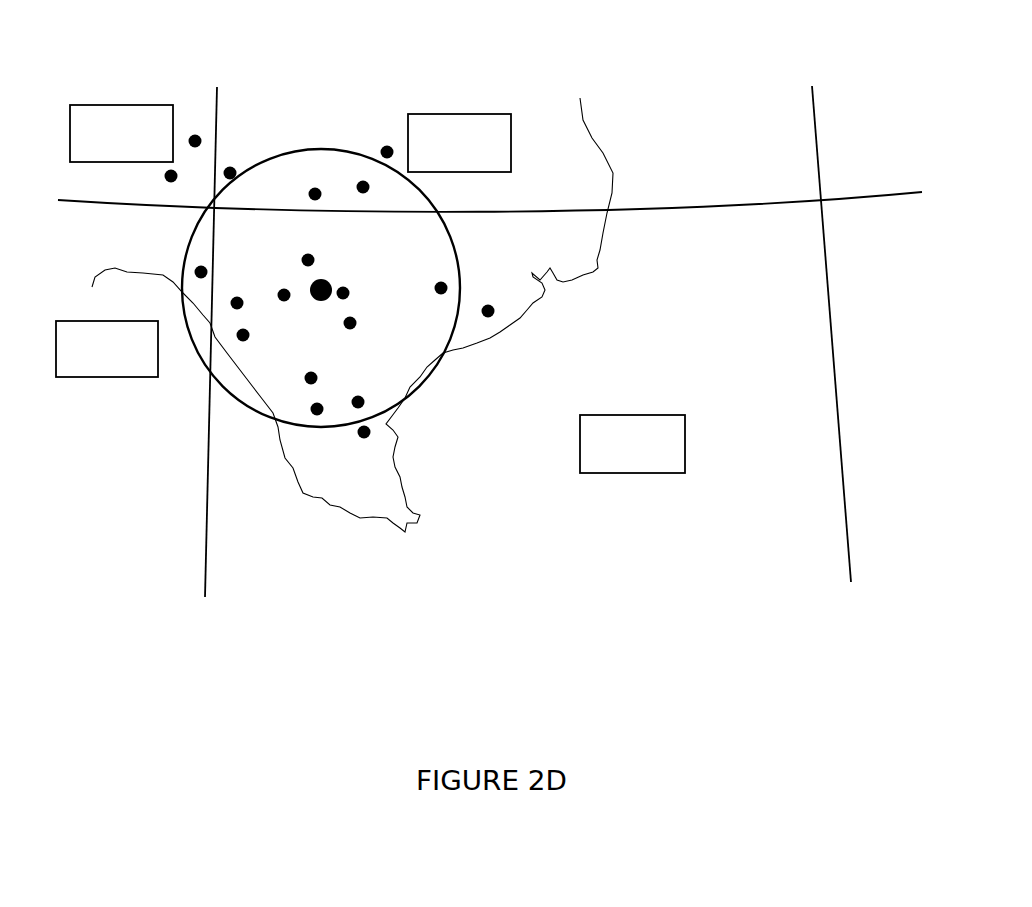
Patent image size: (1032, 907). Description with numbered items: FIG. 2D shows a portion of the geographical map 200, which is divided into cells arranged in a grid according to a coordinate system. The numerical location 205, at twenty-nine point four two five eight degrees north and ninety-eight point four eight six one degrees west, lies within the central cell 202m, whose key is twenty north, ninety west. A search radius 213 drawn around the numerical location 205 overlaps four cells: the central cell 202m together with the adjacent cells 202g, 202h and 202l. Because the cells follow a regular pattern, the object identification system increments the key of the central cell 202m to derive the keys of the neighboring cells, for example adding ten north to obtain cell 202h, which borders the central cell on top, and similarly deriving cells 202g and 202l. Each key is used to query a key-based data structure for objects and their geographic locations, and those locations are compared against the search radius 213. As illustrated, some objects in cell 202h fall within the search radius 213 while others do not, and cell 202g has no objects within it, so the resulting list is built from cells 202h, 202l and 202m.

The geographical map 200 is at (70, 57).
The cell 202g is at (166, 152).
The cell 202h is at (502, 166).
The cell 202l is at (150, 368).
The cell 202m is at (675, 464).
The numerical location 205 is at (321, 290).
The search radius 213 is at (395, 408).